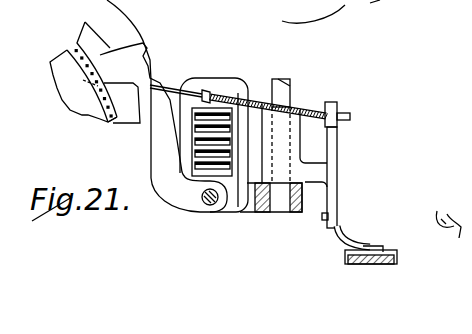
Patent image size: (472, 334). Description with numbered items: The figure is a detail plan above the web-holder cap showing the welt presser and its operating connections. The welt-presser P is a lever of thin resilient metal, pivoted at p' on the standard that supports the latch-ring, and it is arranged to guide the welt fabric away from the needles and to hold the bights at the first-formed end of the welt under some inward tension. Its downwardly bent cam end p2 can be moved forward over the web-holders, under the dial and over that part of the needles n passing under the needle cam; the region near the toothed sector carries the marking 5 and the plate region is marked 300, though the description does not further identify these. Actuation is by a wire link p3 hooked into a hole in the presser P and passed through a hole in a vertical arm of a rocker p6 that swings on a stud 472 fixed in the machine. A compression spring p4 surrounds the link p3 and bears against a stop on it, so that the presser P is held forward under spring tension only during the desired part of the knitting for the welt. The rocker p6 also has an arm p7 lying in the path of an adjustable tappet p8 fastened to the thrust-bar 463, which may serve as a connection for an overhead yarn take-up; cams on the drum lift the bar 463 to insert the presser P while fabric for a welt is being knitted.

The plate 300 is at (108, 14).
The welt-presser P is at (128, 62).
The pivot p' is at (191, 220).
The cam end p2 is at (70, 92).
The bracket 5 is at (100, 110).
The needles n is at (113, 118).
The compression spring p4 is at (223, 97).
The stud 472 is at (283, 90).
The rocker p6 is at (318, 172).
The wire link p3 is at (338, 113).
The arm p7 is at (335, 202).
The adjustable tappet p8 is at (345, 237).
The thrust-bar 463 is at (397, 258).